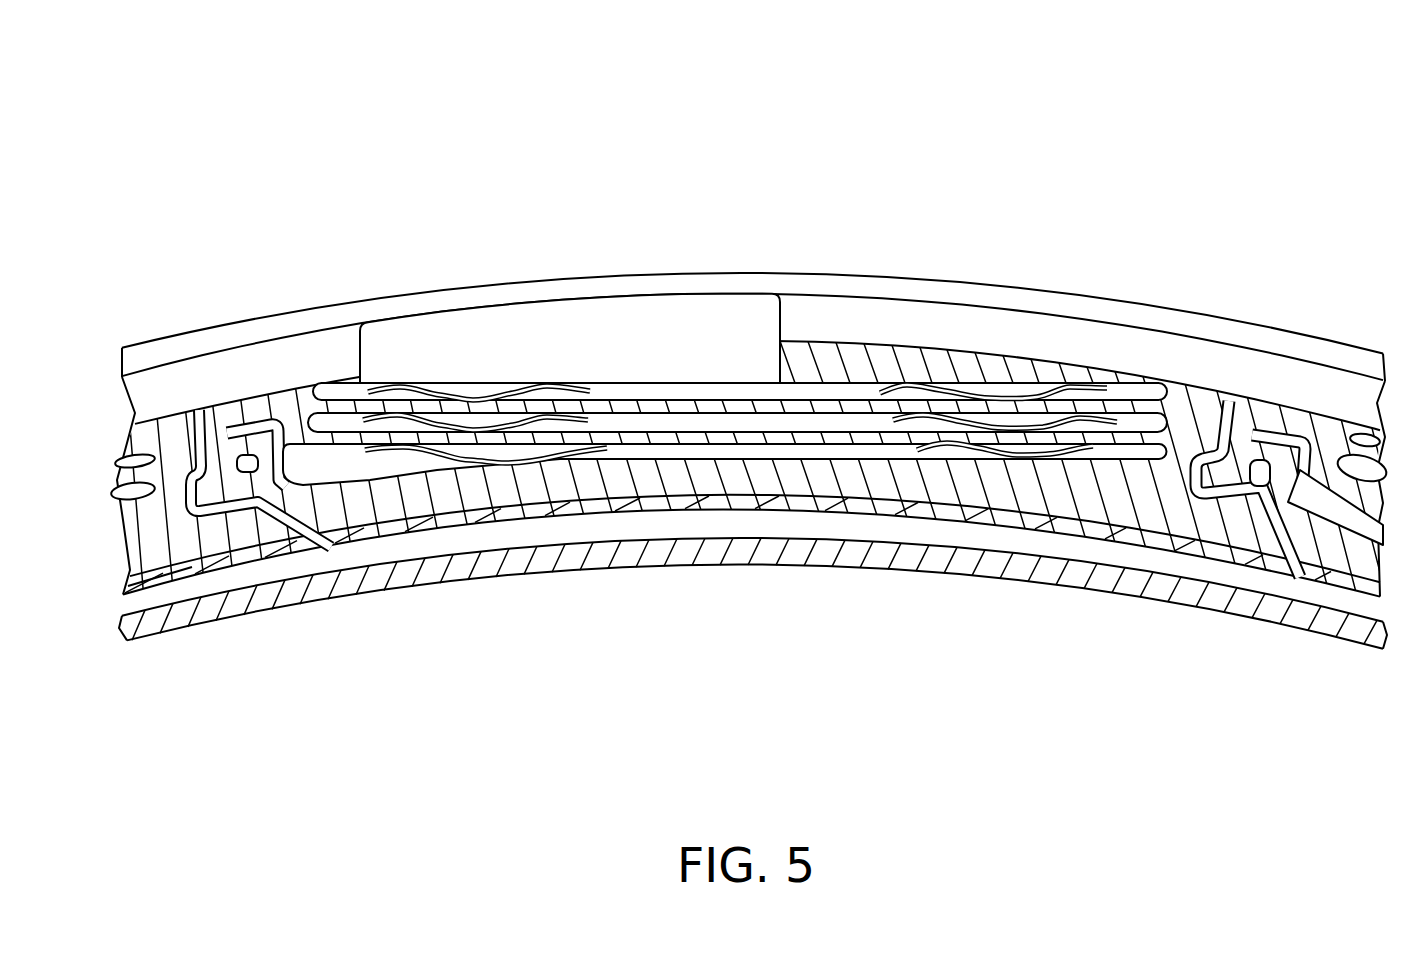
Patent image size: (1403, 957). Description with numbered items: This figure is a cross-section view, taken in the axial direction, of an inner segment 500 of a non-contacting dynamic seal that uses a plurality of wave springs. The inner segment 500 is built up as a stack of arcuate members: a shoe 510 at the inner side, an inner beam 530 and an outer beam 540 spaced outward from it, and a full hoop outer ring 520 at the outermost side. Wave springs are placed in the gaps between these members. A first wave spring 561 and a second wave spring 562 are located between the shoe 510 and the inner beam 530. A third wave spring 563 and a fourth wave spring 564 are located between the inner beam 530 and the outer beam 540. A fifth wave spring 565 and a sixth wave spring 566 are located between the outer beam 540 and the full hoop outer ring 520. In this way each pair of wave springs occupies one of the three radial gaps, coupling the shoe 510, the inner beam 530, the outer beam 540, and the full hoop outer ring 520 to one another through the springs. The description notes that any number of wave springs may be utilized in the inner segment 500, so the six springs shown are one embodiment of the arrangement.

The inner segment 500 is at (257, 114).
The shoe 510 is at (902, 513).
The full hoop outer ring 520 is at (1017, 283).
The inner beam 530 is at (790, 447).
The outer beam 540 is at (1143, 397).
The first wave spring 561 is at (464, 463).
The second wave spring 562 is at (1078, 450).
The third wave spring 563 is at (367, 417).
The fourth wave spring 564 is at (1113, 423).
The fifth wave spring 565 is at (470, 385).
The sixth wave spring 566 is at (918, 385).